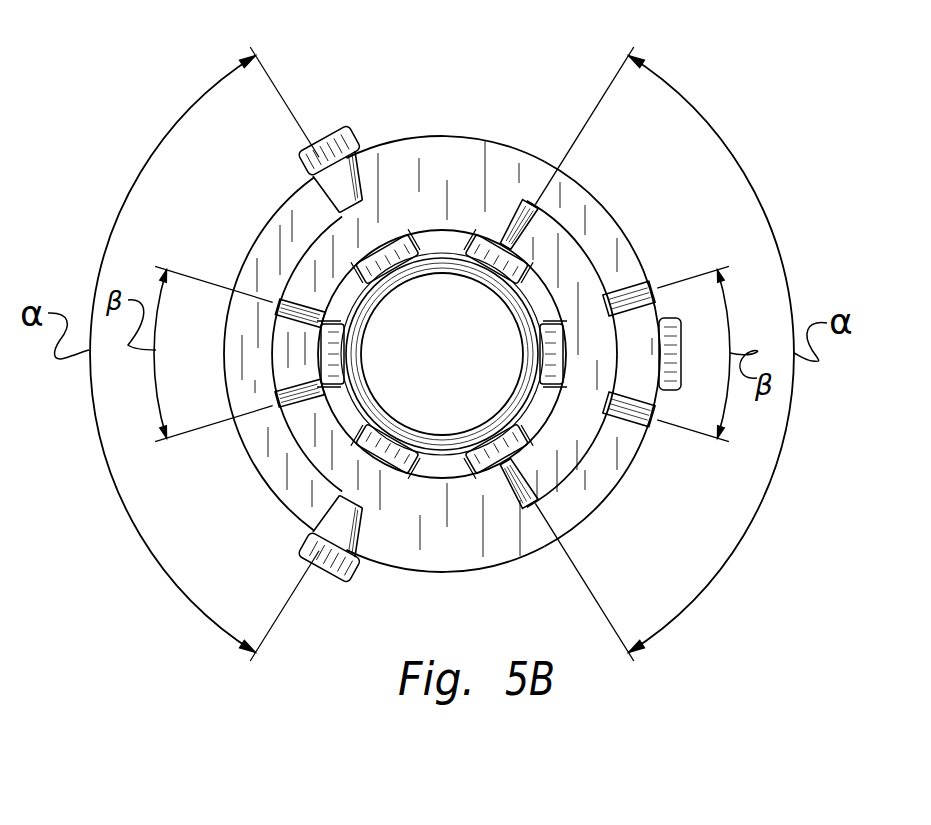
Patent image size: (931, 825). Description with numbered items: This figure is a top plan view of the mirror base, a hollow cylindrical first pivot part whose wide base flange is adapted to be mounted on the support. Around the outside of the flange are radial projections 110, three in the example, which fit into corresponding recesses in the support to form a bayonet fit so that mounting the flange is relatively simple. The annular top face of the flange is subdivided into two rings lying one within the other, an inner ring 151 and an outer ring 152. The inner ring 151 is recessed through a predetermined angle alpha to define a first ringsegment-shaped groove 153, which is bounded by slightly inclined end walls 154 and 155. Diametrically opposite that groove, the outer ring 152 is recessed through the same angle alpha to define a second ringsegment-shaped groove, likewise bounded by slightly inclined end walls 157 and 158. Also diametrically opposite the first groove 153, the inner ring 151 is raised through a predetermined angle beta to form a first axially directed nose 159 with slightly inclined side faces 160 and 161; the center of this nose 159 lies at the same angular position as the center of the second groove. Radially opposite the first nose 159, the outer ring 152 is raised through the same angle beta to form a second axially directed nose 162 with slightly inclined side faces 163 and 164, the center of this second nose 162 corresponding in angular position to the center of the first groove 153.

The radial projections 110 is at (342, 134).
The inner ring 151 is at (322, 462).
The outer ring 152 is at (597, 480).
The first ringsegment-shaped groove 153 is at (567, 258).
The end wall 154 is at (504, 490).
The end wall 155 is at (520, 208).
The end wall 157 is at (397, 155).
The end wall 158 is at (357, 525).
The first axially directed nose 159 is at (296, 354).
The side face 160 is at (322, 293).
The side face 161 is at (302, 408).
The second axially directed nose 162 is at (640, 370).
The side face 163 is at (627, 428).
The side face 164 is at (627, 282).